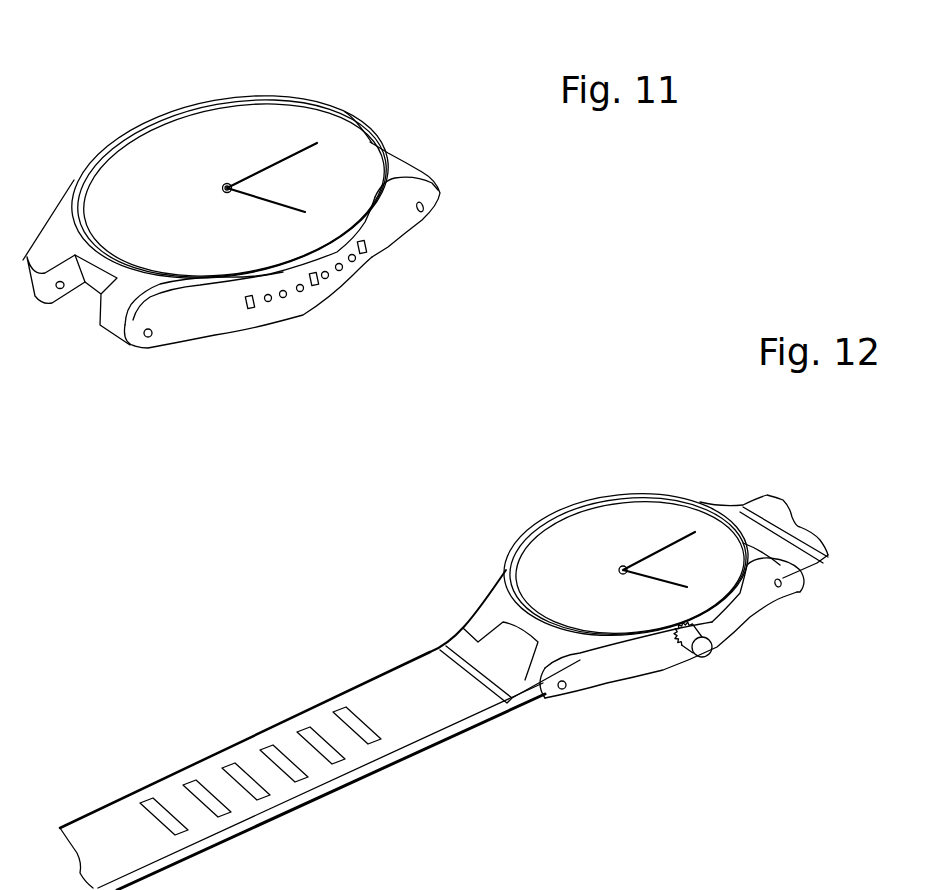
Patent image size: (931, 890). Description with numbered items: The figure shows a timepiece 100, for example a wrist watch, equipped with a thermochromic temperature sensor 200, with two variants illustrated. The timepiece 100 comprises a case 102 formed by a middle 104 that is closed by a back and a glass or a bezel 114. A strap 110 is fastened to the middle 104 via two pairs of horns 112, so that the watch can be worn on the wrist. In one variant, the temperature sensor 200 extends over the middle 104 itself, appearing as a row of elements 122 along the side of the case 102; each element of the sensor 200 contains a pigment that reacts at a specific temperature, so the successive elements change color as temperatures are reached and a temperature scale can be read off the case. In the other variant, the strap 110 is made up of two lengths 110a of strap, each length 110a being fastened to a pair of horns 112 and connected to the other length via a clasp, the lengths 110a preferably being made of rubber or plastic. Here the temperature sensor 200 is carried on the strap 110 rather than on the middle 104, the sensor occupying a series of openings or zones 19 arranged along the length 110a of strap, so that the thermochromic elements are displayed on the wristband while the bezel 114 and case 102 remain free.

In FIG. 11, the timepiece 100 is at (252, 209).
In FIG. 12, the timepiece 100 is at (444, 626).
In FIG. 12, the case 102 is at (739, 495).
In FIG. 11, the middle 104 is at (303, 280).
In FIG. 12, the middle 104 is at (668, 645).
In FIG. 12, the strap 110 is at (320, 716).
In FIG. 12, the length of strap 110a is at (217, 823).
In FIG. 11, the horns 112 is at (158, 333).
In FIG. 12, the horns 112 is at (580, 678).
In FIG. 11, the bezel 114 is at (158, 117).
In FIG. 12, the bezel 114 is at (626, 564).
In FIG. 11, the input buttons 122 is at (302, 292).
In FIG. 12, the slot 19 is at (333, 752).
In FIG. 12, the temperature sensor 200 is at (265, 752).